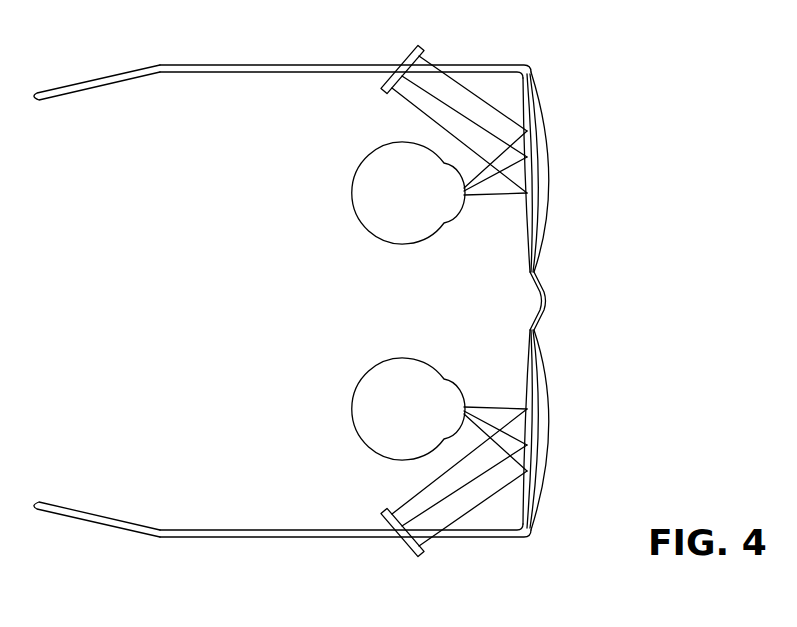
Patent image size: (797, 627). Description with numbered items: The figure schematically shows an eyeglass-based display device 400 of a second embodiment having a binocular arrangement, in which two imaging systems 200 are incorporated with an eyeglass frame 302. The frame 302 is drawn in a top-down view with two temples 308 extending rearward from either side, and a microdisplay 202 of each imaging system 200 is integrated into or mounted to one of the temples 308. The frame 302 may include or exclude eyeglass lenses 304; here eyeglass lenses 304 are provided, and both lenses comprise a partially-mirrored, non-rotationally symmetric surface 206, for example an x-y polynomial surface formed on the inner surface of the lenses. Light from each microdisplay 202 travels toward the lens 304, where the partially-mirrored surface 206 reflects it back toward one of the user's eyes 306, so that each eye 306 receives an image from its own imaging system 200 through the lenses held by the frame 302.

The eyeglass-based display device 400 is at (620, 85).
The temple 308 is at (320, 66).
The eyeglass lens 304 is at (548, 170).
The eyeglass frame 302 is at (546, 298).
The microdisplay 202 is at (410, 56).
The imaging system 200 is at (500, 88).
The partially-mirrored, non-rotationally symmetric surface 206 is at (527, 200).
The eye 306 is at (398, 223).